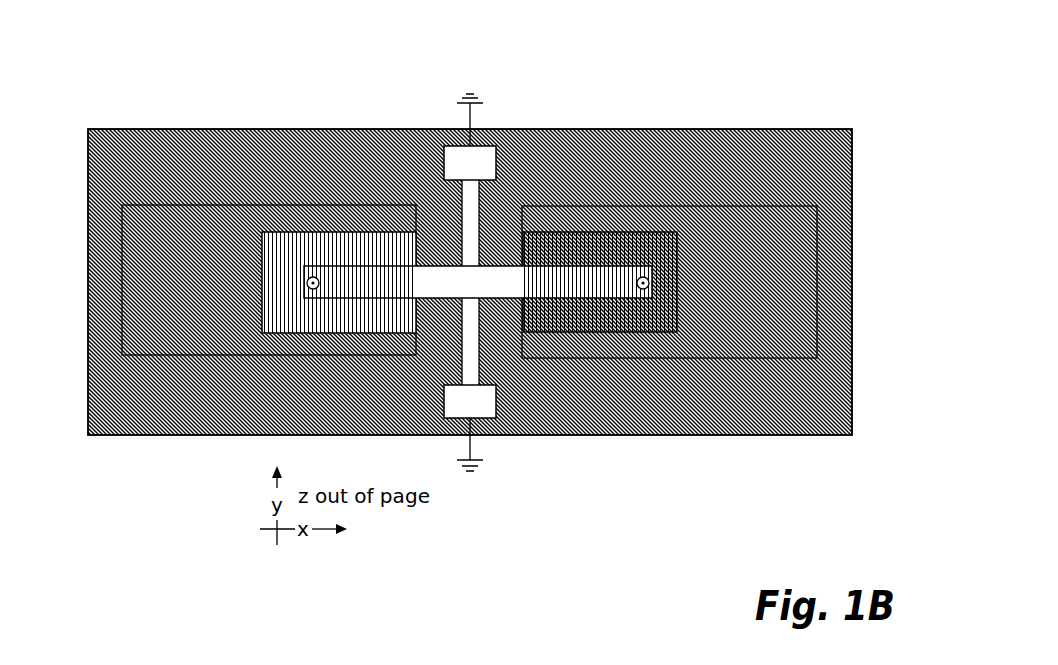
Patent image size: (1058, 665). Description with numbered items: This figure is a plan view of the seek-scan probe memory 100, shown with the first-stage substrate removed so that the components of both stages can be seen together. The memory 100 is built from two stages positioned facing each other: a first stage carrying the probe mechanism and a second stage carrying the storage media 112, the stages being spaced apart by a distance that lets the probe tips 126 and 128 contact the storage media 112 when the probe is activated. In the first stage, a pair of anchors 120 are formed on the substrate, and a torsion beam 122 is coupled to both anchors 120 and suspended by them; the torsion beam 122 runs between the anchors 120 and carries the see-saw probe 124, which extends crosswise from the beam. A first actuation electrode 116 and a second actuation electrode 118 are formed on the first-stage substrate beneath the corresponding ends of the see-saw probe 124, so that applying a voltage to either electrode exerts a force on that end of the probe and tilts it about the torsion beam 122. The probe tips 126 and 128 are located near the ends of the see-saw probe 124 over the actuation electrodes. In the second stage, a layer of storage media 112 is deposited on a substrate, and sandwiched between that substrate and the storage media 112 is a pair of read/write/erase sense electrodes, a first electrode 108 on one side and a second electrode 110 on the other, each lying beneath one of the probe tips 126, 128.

The memory 100 is at (320, 60).
The first electrode 108 is at (160, 213).
The second electrode 110 is at (733, 213).
The storage media 112 is at (777, 423).
The first actuation electrode 116 is at (300, 324).
The second actuation electrode 118 is at (640, 323).
The anchors 120 is at (480, 165).
The torsion beam 122 is at (470, 222).
The see-saw probe 124 is at (478, 282).
The probe tip 126 is at (311, 277).
The probe tip 128 is at (645, 240).